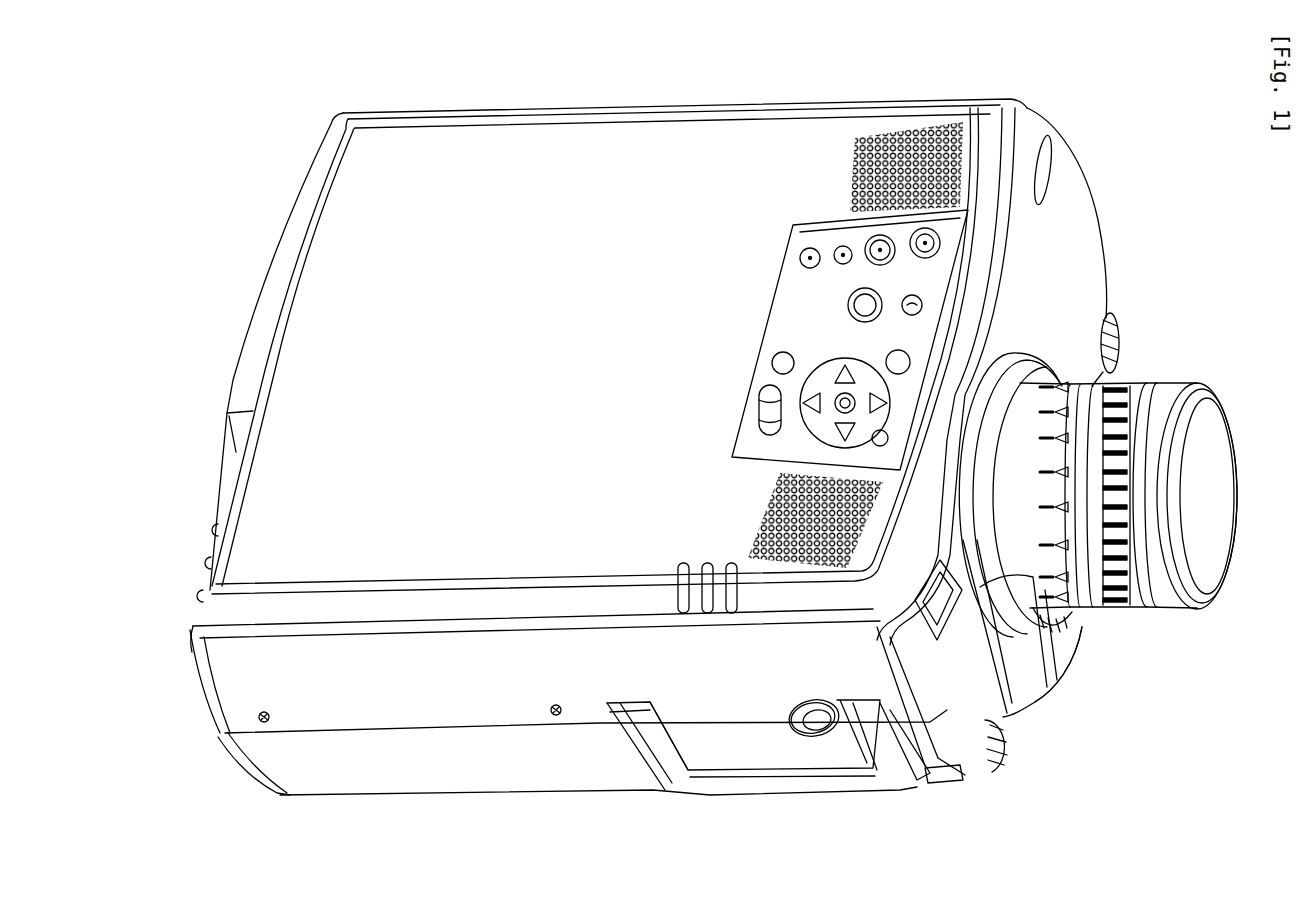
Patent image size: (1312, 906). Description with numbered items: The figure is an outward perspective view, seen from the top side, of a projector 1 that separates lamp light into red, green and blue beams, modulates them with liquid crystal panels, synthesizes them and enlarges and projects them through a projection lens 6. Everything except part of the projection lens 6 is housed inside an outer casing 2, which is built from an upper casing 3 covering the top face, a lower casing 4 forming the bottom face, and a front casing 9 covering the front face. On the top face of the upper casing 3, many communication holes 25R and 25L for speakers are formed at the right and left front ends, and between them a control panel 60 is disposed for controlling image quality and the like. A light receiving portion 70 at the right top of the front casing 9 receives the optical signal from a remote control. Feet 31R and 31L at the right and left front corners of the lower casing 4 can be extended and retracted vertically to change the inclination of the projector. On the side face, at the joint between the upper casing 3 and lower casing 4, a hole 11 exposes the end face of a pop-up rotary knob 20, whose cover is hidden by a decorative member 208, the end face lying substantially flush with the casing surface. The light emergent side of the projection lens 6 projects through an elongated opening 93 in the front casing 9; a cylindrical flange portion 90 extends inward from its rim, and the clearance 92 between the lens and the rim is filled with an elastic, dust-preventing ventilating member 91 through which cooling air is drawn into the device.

The projector 1 is at (296, 127).
The outer casing 2 is at (208, 734).
The upper casing 3 is at (228, 672).
The lower casing 4 is at (270, 762).
The projection lens 6 is at (1117, 384).
The front casing 9 is at (1050, 660).
The hole 11 is at (790, 712).
The pop-up rotary knob 20 is at (825, 735).
The decorative member 208 is at (805, 725).
The communication hole 25L is at (850, 160).
The communication hole 25R is at (768, 505).
The foot 31L is at (1118, 325).
The foot 31R is at (997, 767).
The control panel 60 is at (800, 295).
The light receiving portion 70 is at (1050, 170).
The flange portion 90 is at (1062, 660).
The ventilating member 91 is at (1070, 628).
The clearance 92 is at (1090, 620).
The opening 93 is at (1023, 399).